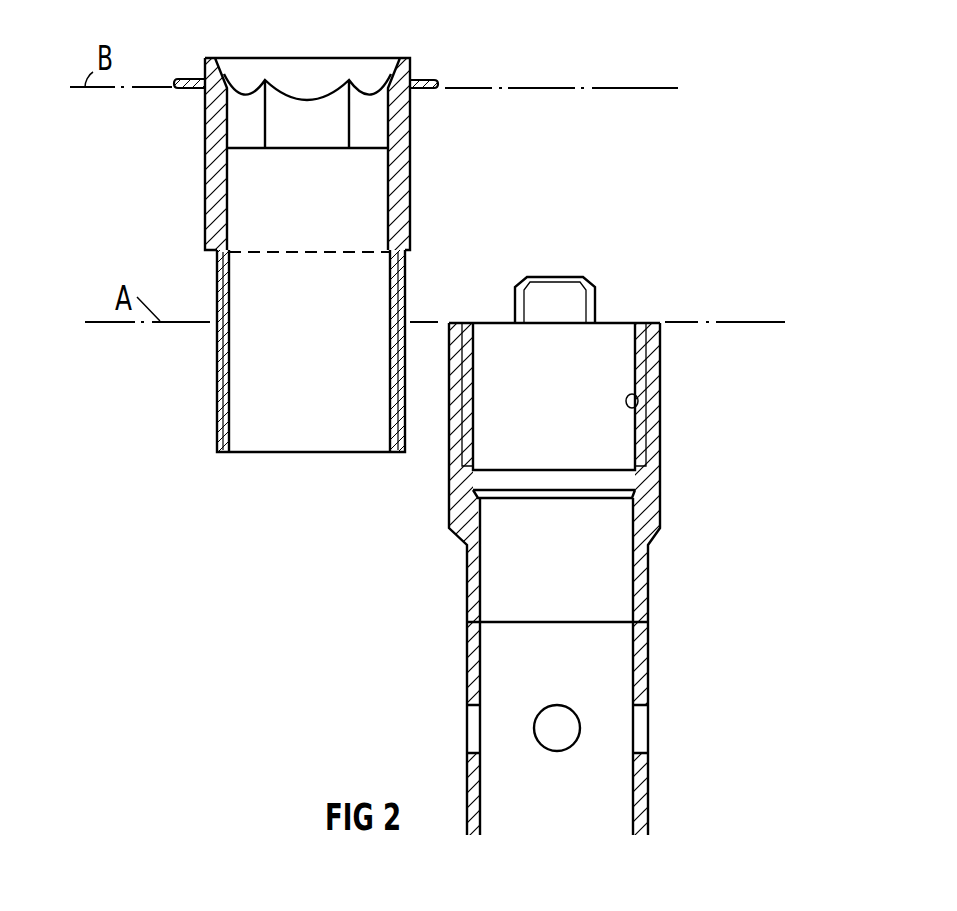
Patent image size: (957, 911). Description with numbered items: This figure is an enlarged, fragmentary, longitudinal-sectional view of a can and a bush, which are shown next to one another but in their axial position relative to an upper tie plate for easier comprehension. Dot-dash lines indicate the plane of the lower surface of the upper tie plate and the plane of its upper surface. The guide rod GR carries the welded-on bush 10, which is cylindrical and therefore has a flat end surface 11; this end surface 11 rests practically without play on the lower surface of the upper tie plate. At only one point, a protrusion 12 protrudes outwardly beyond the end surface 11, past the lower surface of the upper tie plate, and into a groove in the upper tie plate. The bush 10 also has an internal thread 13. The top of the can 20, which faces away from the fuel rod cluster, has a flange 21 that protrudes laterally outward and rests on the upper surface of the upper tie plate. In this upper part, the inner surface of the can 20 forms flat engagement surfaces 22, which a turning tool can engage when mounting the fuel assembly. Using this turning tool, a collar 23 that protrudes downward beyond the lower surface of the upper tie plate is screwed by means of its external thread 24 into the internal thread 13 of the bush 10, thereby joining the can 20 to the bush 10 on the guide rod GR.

The bush 10 is at (466, 580).
The end surface 11 is at (651, 322).
The protrusion 12 is at (588, 296).
The internal thread 13 is at (638, 408).
The can 20 is at (213, 349).
The flange 21 is at (430, 79).
The flat engagement surfaces 22 is at (305, 115).
The collar 23 is at (230, 418).
The external thread 24 is at (217, 410).
The guide rod GR is at (465, 672).